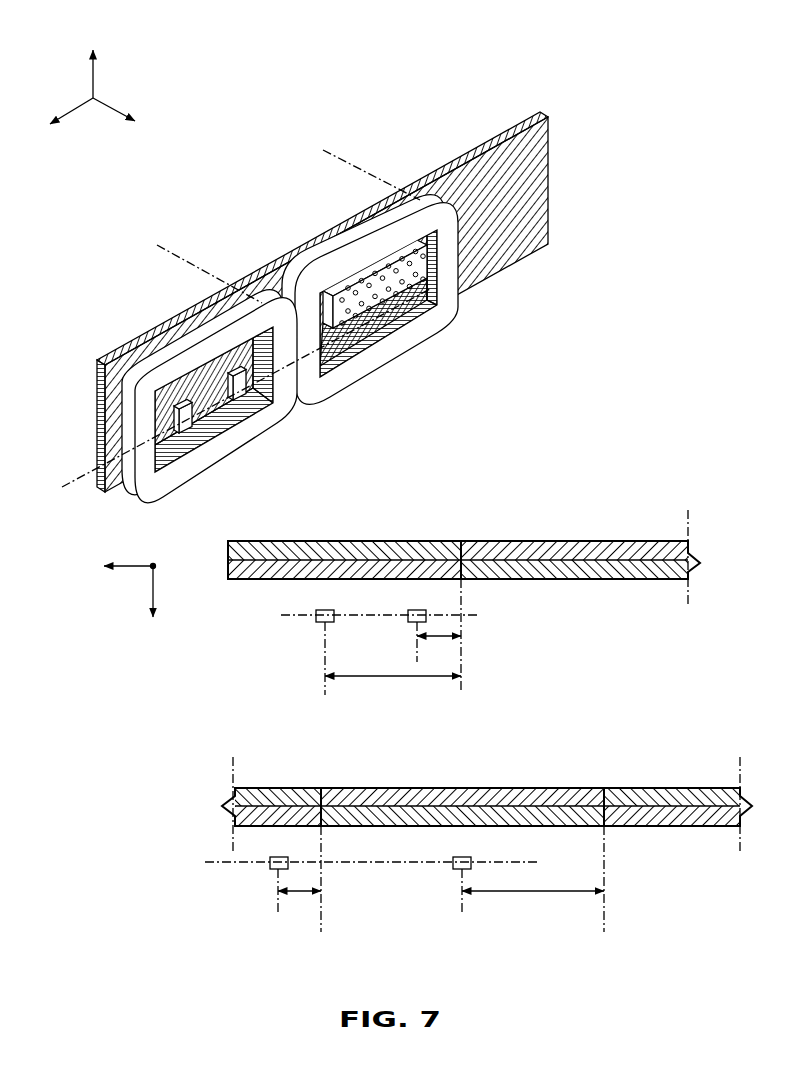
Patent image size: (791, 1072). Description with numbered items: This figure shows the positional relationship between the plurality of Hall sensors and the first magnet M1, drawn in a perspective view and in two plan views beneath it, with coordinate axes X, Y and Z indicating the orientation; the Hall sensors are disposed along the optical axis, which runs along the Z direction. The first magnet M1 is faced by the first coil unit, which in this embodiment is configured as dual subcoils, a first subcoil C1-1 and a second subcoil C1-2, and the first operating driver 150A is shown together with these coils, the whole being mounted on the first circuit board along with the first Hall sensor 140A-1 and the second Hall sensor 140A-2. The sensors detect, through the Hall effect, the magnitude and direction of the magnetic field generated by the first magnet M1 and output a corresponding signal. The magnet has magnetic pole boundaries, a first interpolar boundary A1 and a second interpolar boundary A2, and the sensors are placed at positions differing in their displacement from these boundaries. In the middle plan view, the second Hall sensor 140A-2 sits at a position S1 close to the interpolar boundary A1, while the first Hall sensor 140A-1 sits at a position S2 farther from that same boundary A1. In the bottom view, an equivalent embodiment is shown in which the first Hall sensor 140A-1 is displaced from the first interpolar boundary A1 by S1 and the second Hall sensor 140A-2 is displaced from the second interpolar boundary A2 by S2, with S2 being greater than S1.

The first magnet M1 is at (258, 255).
The first subcoil C1-1 is at (180, 365).
The second subcoil C1-2 is at (338, 275).
The first operating driver 150A is at (390, 297).
The first Hall sensor 140A-1 is at (323, 609).
The second Hall sensor 140A-2 is at (247, 388).
The first interpolar boundary A1 is at (321, 788).
The second interpolar boundary A2 is at (604, 788).
The Z axis Z is at (284, 486).
The X axis X is at (132, 295).
The Y axis Y is at (124, 371).
The position close to the interpolar boundary S1 is at (369, 772).
The position further from the interpolar boundary S2 is at (464, 772).